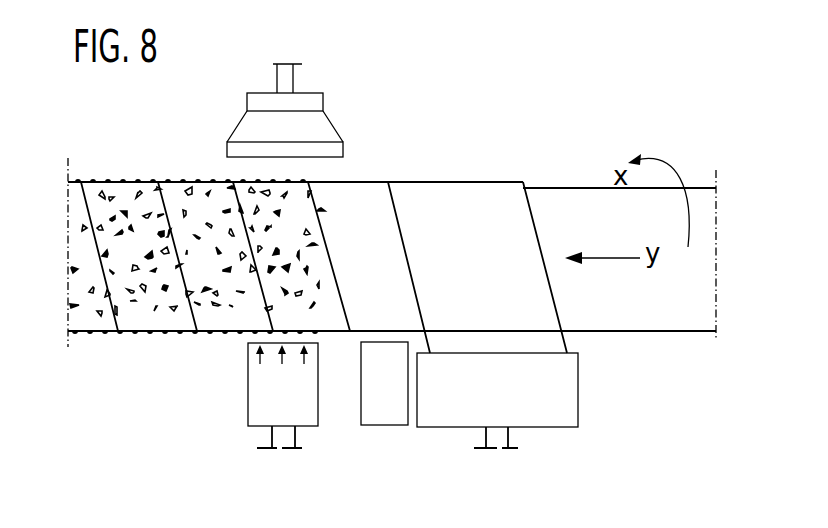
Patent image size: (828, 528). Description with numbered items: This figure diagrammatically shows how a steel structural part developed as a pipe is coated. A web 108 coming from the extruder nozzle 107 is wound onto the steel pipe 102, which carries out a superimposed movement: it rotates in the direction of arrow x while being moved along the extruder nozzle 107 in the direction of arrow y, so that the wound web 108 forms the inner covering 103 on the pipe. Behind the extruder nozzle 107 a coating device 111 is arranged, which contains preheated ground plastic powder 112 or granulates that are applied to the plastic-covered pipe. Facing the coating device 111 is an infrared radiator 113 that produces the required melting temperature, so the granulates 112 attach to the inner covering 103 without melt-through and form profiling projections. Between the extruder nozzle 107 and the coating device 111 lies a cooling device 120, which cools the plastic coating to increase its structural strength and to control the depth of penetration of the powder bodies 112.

The steel pipe 102 is at (558, 207).
The inner covering 103 is at (375, 229).
The extruder nozzle 107 is at (562, 405).
The web 108 is at (512, 207).
The coating device 111 is at (260, 408).
The plastic powder granulates 112 is at (188, 182).
The infrared radiator 113 is at (253, 126).
The cooling device 120 is at (382, 400).